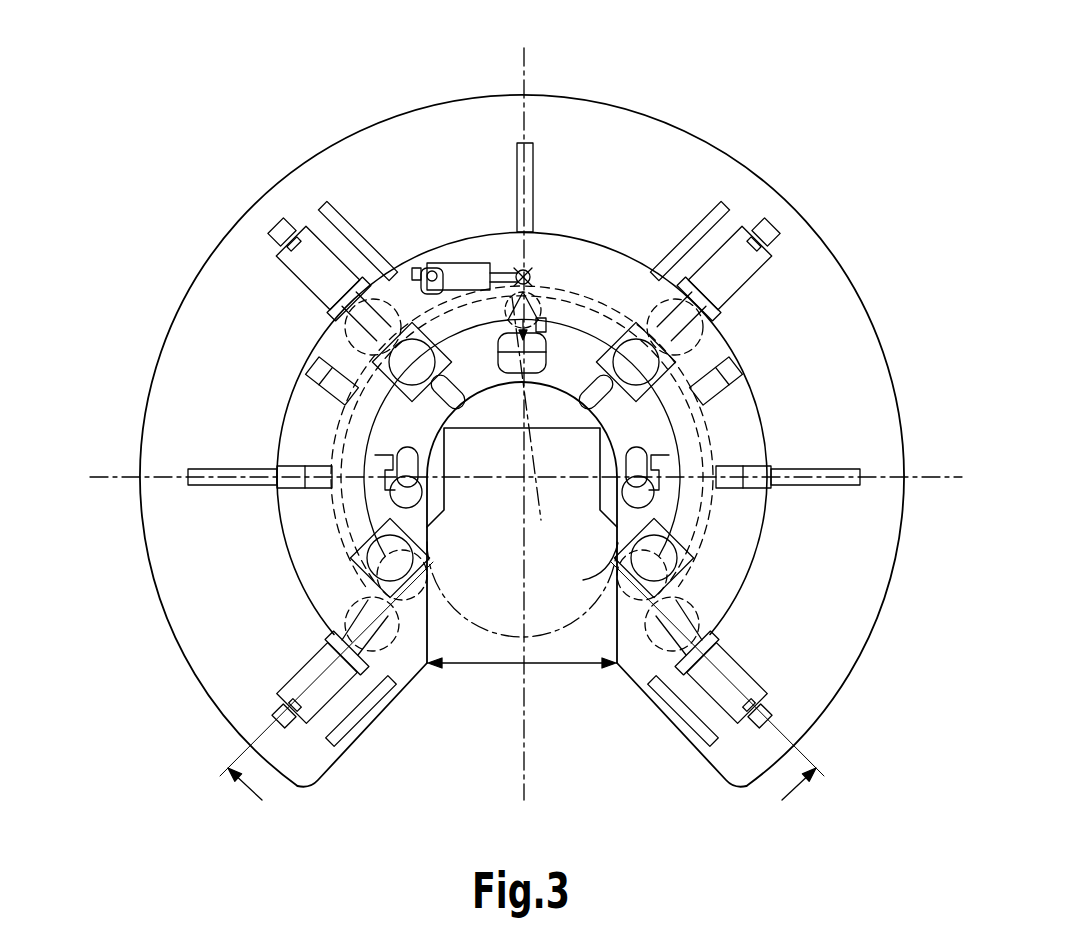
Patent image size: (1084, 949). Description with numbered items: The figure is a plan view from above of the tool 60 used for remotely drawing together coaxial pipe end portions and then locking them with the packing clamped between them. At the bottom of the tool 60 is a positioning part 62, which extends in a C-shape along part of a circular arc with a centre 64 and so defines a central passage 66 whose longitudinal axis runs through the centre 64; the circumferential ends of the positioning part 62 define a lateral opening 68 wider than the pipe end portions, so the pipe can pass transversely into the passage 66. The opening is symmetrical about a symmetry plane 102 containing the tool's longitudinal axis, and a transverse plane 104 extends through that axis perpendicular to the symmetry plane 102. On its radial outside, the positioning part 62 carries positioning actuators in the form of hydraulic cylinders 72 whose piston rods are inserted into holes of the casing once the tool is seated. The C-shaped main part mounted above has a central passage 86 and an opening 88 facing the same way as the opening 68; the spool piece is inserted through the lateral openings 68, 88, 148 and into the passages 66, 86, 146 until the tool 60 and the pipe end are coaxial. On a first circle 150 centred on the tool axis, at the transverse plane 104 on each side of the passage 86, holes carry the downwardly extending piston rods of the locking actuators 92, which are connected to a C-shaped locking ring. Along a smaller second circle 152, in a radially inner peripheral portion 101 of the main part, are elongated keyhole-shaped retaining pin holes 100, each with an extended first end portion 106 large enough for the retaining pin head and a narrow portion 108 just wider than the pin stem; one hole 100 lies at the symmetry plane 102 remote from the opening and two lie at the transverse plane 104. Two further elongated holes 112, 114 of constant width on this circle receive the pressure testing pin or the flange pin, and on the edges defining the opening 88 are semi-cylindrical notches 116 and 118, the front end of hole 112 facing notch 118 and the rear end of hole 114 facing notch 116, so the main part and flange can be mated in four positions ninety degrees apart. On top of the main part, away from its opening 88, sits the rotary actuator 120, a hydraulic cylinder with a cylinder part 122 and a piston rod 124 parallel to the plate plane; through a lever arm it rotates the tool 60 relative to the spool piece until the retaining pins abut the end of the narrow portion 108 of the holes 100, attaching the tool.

The tool 60 is at (748, 146).
The positioning part 62 is at (808, 278).
The centre 64 is at (527, 482).
The central passage 66 is at (678, 696).
The opening 68 is at (365, 696).
The hydraulic cylinders 72 is at (298, 676).
The central passage 86 is at (678, 696).
The opening 88 is at (365, 696).
The locking actuators 92 is at (392, 371).
The retaining pin holes 100 is at (652, 457).
The radially inner peripheral portion 101 is at (577, 355).
The symmetry plane 102 is at (527, 72).
The transverse plane 104 is at (118, 476).
The first end portion 106 is at (700, 412).
The narrow portion 108 is at (655, 490).
The hole 112 is at (440, 398).
The hole 114 is at (703, 380).
The notch 116 is at (430, 557).
The notch 118 is at (592, 703).
The rotary actuator 120 is at (404, 250).
The cylinder part 122 is at (452, 262).
The piston rod 124 is at (512, 265).
The passage 146 is at (654, 716).
The lateral opening 148 is at (512, 716).
The first circle 150 is at (400, 597).
The second circle 152 is at (400, 557).